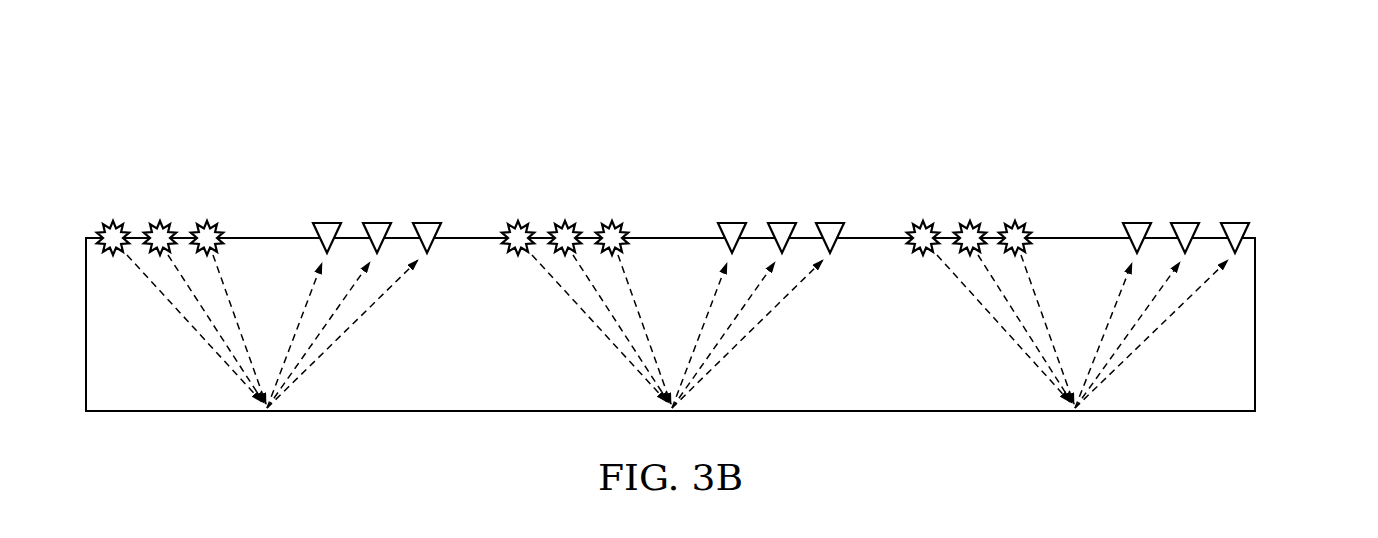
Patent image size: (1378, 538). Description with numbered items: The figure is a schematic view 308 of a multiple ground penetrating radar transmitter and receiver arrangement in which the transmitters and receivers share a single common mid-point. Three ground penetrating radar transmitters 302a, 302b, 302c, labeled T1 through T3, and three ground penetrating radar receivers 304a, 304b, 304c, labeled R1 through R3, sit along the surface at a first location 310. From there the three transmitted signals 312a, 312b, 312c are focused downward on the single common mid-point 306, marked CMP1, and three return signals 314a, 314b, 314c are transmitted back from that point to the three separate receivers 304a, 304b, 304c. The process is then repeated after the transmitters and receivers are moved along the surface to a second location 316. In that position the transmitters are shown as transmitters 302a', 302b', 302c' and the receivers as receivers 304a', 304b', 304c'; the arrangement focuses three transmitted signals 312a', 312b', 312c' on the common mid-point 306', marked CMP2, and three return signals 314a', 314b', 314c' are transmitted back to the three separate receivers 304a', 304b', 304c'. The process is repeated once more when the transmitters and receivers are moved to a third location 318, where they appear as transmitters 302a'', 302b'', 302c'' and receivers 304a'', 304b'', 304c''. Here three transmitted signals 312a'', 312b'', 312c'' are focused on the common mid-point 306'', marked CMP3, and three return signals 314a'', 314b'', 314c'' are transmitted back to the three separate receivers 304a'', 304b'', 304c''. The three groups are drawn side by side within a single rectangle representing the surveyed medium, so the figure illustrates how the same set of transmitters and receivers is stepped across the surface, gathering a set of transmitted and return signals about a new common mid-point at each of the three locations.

The ground penetrating radar transmitter 302a is at (226, 204).
The ground penetrating radar transmitter 302b is at (152, 197).
The ground penetrating radar transmitter 302c is at (72, 222).
The ground penetrating radar receiver 304a is at (314, 198).
The ground penetrating radar receiver 304b is at (372, 176).
The ground penetrating radar receiver 304c is at (430, 188).
The common mid-point 306 is at (266, 369).
The schematic view 308 is at (432, 65).
The first location 310 is at (277, 222).
The transmitted signal 312a is at (194, 329).
The transmitted signal 312b is at (184, 329).
The transmitted signal 312c is at (179, 328).
The return signal 314a is at (333, 335).
The return signal 314b is at (348, 335).
The return signal 314c is at (358, 334).
The second location 316 is at (683, 222).
The third location 318 is at (1087, 222).
The ground penetrating radar transmitter 302a' is at (634, 204).
The ground penetrating radar transmitter 302b' is at (564, 189).
The ground penetrating radar transmitter 302c' is at (497, 204).
The ground penetrating radar receiver 304a' is at (720, 197).
The ground penetrating radar receiver 304b' is at (778, 174).
The ground penetrating radar receiver 304c' is at (834, 189).
The common mid-point 306' is at (670, 369).
The transmitted signal 312a' is at (598, 329).
The transmitted signal 312b' is at (589, 329).
The transmitted signal 312c' is at (582, 328).
The return signal 314a' is at (741, 335).
The return signal 314b' is at (754, 335).
The return signal 314c' is at (763, 334).
The ground penetrating radar transmitter 302a'' is at (1038, 204).
The ground penetrating radar transmitter 302b'' is at (968, 188).
The ground penetrating radar transmitter 302c'' is at (905, 204).
The ground penetrating radar receiver 304a'' is at (1125, 196).
The ground penetrating radar receiver 304b'' is at (1207, 192).
The ground penetrating radar receiver 304c'' is at (1288, 219).
The common mid-point 306'' is at (1074, 369).
The transmitted signal 312a'' is at (1000, 329).
The transmitted signal 312b'' is at (991, 329).
The transmitted signal 312c'' is at (985, 328).
The return signal 314a'' is at (1142, 335).
The return signal 314b'' is at (1153, 335).
The return signal 314c'' is at (1160, 334).